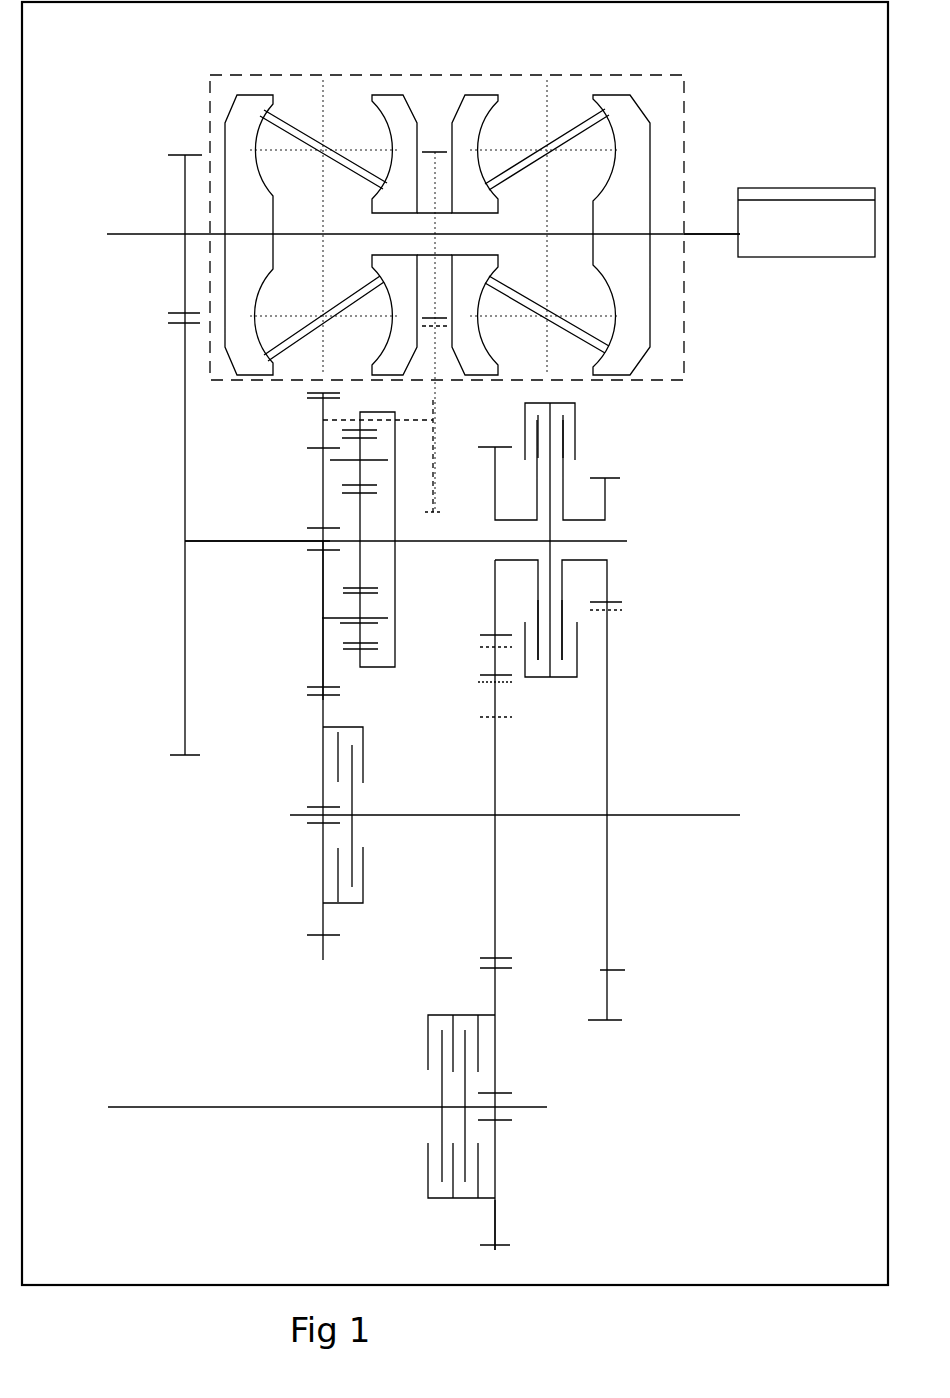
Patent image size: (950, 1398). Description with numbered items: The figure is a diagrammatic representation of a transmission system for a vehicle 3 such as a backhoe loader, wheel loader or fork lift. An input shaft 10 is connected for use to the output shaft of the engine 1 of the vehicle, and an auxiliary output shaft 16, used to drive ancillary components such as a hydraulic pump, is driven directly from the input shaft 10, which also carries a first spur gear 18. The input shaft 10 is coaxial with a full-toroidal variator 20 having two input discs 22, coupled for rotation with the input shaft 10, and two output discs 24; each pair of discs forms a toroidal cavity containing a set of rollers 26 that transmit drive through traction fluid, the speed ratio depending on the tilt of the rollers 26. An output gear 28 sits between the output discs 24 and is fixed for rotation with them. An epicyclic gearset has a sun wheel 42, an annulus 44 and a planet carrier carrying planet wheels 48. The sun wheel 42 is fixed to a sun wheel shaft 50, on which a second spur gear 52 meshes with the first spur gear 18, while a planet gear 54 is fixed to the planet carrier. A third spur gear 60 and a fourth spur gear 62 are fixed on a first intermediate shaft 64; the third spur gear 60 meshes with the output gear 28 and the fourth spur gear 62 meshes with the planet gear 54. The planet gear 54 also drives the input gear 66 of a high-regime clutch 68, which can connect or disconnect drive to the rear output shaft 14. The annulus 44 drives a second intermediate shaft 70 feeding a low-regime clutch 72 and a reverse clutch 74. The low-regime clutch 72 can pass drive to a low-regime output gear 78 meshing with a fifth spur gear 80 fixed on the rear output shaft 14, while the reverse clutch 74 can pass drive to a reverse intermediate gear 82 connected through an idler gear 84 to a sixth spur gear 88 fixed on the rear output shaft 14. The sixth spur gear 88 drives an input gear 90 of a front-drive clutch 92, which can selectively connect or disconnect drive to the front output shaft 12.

The engine 1 is at (815, 188).
The vehicle 3 is at (808, 1285).
The input shaft 10 is at (718, 234).
The front output shaft 12 is at (138, 1107).
The rear output shaft 14 is at (676, 815).
The auxiliary output shaft 16 is at (127, 234).
The first spur gear 18 is at (185, 270).
The full-toroidal variator 20 is at (684, 172).
The input discs 22 is at (230, 115).
The output discs 24 is at (393, 104).
The rollers 26 is at (263, 117).
The output gear 28 is at (437, 152).
The sun wheel 42 is at (360, 562).
The annulus 44 is at (350, 655).
The planet wheels 48 is at (360, 476).
The sun wheel shaft 50 is at (228, 542).
The second spur gear 52 is at (185, 479).
The planet gear 54 is at (322, 664).
The third spur gear 60 is at (348, 393).
The fourth spur gear 62 is at (335, 388).
The first intermediate shaft 64 is at (417, 420).
The input gear 66 is at (321, 960).
The high-regime clutch 68 is at (372, 867).
The second intermediate shaft 70 is at (617, 540).
The low-regime clutch 72 is at (582, 432).
The reverse clutch 74 is at (540, 683).
The low-regime output gear 78 is at (607, 589).
The fifth spur gear 80 is at (607, 970).
The reverse intermediate gear 82 is at (495, 593).
The idler gear 84 is at (495, 658).
The sixth spur gear 88 is at (497, 920).
The input gear 90 is at (497, 1236).
The front-drive clutch 92 is at (425, 1207).